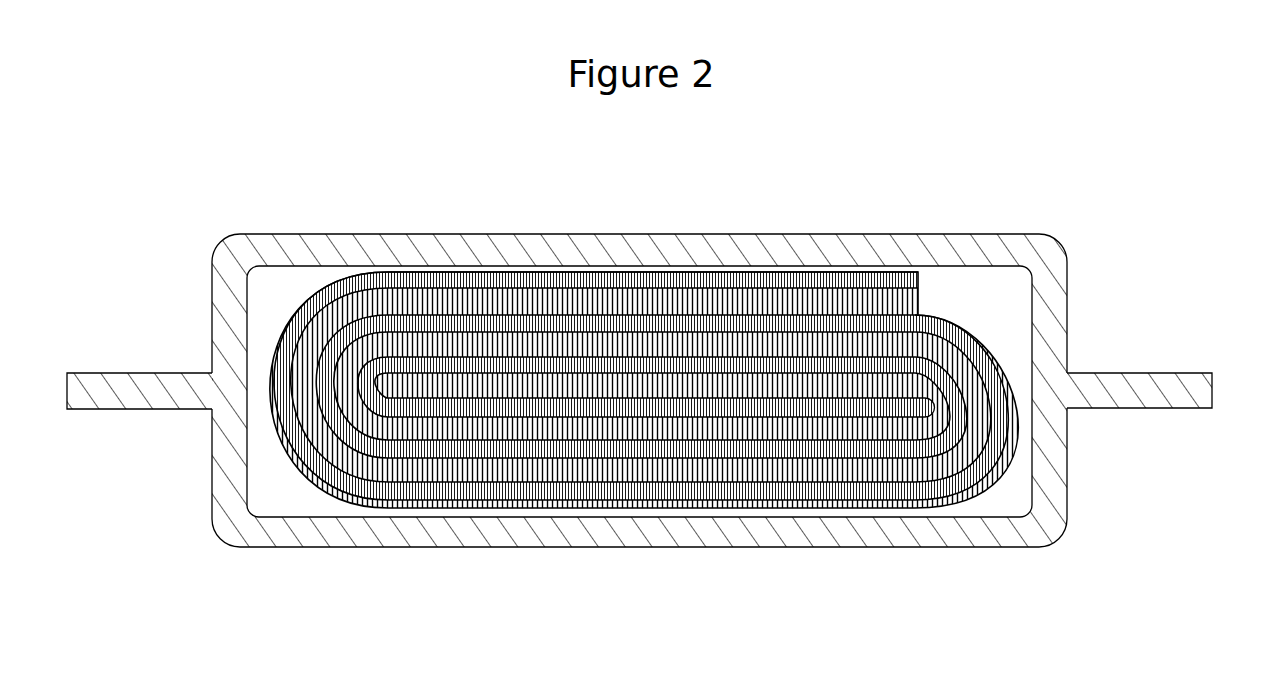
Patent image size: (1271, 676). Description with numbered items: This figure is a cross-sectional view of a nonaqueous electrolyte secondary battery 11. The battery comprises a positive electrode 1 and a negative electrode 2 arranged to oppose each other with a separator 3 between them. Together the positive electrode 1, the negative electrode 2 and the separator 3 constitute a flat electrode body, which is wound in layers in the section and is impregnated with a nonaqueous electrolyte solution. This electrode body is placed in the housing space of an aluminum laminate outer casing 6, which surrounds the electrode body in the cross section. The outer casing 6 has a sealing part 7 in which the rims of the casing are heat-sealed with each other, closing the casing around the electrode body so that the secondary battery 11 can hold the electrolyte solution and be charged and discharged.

The positive electrode 1 is at (900, 307).
The negative electrode 2 is at (918, 283).
The separator 3 is at (865, 270).
The aluminum laminate outer casing 6 is at (1038, 235).
The sealing part 7 is at (1135, 380).
The nonaqueous electrolyte secondary battery 11 is at (639, 303).